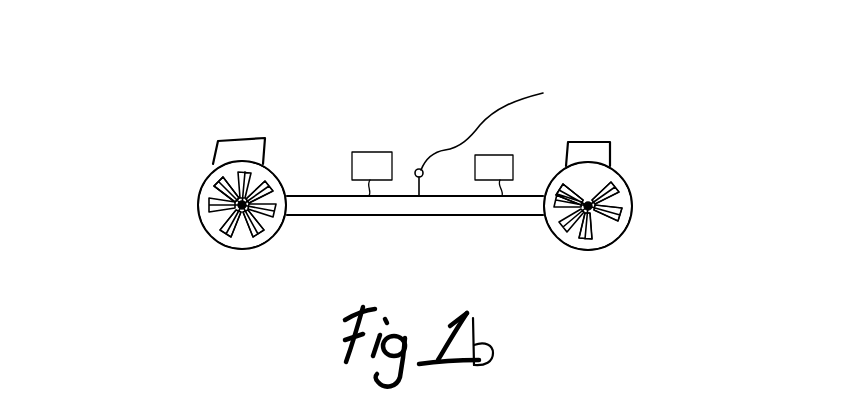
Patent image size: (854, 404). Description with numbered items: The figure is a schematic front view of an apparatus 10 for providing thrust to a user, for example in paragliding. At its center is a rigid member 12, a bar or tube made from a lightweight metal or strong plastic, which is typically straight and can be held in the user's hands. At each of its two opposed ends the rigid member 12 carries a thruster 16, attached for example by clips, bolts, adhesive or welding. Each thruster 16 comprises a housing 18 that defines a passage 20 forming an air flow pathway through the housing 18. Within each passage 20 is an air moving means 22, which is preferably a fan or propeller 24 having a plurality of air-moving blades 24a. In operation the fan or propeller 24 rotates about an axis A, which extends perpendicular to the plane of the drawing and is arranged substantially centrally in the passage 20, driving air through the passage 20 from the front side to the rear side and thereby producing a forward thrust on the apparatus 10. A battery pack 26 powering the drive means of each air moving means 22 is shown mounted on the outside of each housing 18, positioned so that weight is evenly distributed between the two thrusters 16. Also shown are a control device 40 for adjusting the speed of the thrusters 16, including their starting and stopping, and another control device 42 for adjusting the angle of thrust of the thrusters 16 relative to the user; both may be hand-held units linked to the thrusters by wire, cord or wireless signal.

The apparatus 10 is at (660, 181).
The rigid member 12 is at (445, 206).
The thruster 16 is at (202, 200).
The housing 18 is at (241, 250).
The passage 20 is at (262, 183).
The air moving means 22 is at (252, 226).
The fan or propeller 24 is at (238, 208).
The air-moving blades 24a is at (218, 184).
The battery pack 26 is at (243, 153).
The control device 40 is at (372, 155).
The control device 42 is at (493, 158).
The axis A is at (238, 212).